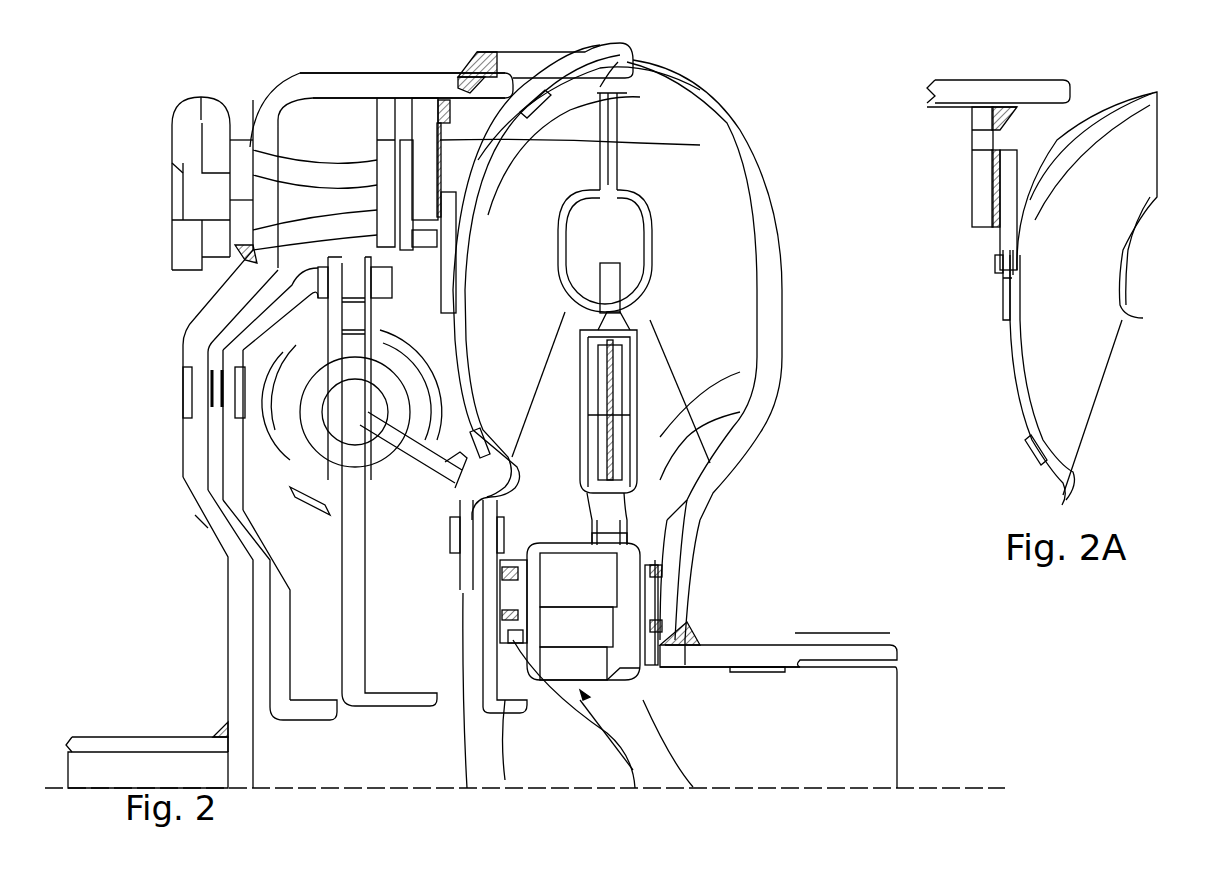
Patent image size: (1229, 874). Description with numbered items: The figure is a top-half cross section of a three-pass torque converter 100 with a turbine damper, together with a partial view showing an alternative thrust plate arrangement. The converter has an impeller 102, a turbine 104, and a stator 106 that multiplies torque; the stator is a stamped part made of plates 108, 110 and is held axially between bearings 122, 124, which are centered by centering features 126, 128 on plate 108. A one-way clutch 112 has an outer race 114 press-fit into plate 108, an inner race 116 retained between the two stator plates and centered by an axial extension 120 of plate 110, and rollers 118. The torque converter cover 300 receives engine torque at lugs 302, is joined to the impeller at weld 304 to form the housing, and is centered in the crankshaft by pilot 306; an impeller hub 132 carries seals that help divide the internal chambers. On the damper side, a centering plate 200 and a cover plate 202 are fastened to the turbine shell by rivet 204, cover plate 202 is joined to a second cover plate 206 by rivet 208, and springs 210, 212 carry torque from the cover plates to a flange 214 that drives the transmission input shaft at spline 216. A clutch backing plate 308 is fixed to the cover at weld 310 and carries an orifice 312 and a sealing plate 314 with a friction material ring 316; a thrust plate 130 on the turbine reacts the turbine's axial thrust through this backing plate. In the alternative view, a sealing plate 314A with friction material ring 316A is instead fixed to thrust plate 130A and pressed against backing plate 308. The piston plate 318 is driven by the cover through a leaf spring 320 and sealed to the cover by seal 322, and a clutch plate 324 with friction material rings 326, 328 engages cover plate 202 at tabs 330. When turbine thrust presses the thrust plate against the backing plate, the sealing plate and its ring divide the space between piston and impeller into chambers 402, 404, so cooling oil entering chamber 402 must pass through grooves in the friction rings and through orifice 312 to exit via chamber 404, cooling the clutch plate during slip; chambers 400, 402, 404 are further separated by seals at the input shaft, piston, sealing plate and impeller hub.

In FIG. 2, the three-pass torque converter 100 is at (790, 110).
In FIG. 2, the impeller 102 is at (705, 207).
In FIG. 2, the turbine 104 is at (553, 207).
In FIG. 2A, the turbine 104 is at (1090, 262).
In FIG. 2, the stator 106 is at (665, 380).
In FIG. 2, the plate 108 is at (740, 412).
In FIG. 2, the plate 110 is at (740, 372).
In FIG. 2, the one-way clutch 112 is at (693, 787).
In FIG. 2, the outer race 114 is at (600, 592).
In FIG. 2, the inner race 116 is at (600, 672).
In FIG. 2, the rollers 118 is at (600, 636).
In FIG. 2, the axial extension 120 is at (700, 610).
In FIG. 2, the bearing 122 is at (700, 575).
In FIG. 2, the bearing 124 is at (715, 515).
In FIG. 2, the centering feature 126 is at (735, 645).
In FIG. 2, the centering feature 128 is at (636, 788).
In FIG. 2, the thrust plate 130 is at (473, 257).
In FIG. 2A, the thrust plate 130A is at (1030, 285).
In FIG. 2, the impeller hub 132 is at (890, 630).
In FIG. 2, the centering plate 200 is at (505, 780).
In FIG. 2, the cover plate 202 is at (510, 645).
In FIG. 2, the rivet 204 is at (495, 545).
In FIG. 2, the cover plate 206 is at (270, 535).
In FIG. 2, the rivet 208 is at (305, 285).
In FIG. 2, the spring 210 is at (300, 430).
In FIG. 2, the spring 212 is at (183, 387).
In FIG. 2, the flange 214 is at (275, 605).
In FIG. 2, the spline 216 is at (385, 717).
In FIG. 2, the torque converter cover 300 is at (270, 86).
In FIG. 2A, the torque converter cover 300 is at (965, 85).
In FIG. 2, the lugs 302 is at (200, 102).
In FIG. 2, the weld 304 is at (485, 52).
In FIG. 2, the pilot 306 is at (85, 738).
In FIG. 2, the clutch backing plate 308 is at (385, 98).
In FIG. 2A, the clutch backing plate 308 is at (972, 118).
In FIG. 2, the weld 310 is at (618, 62).
In FIG. 2A, the weld 310 is at (1070, 110).
In FIG. 2, the orifice 312 is at (600, 80).
In FIG. 2A, the orifice 312 is at (980, 150).
In FIG. 2, the sealing plate 314 is at (700, 90).
In FIG. 2A, the sealing plate 314A is at (1055, 160).
In FIG. 2, the friction material ring 316 is at (700, 145).
In FIG. 2A, the friction material ring 316A is at (1040, 210).
In FIG. 2, the piston plate 318 is at (187, 507).
In FIG. 2, the leaf spring 320 is at (183, 332).
In FIG. 2, the seal 322 is at (275, 92).
In FIG. 2, the clutch plate 324 is at (400, 150).
In FIG. 2, the friction material ring 326 is at (195, 150).
In FIG. 2, the friction material ring 328 is at (400, 217).
In FIG. 2, the tabs 330 is at (400, 240).
In FIG. 2, the chamber 400 is at (355, 199).
In FIG. 2, the chamber 402 is at (437, 557).
In FIG. 2, the chamber 404 is at (630, 247).